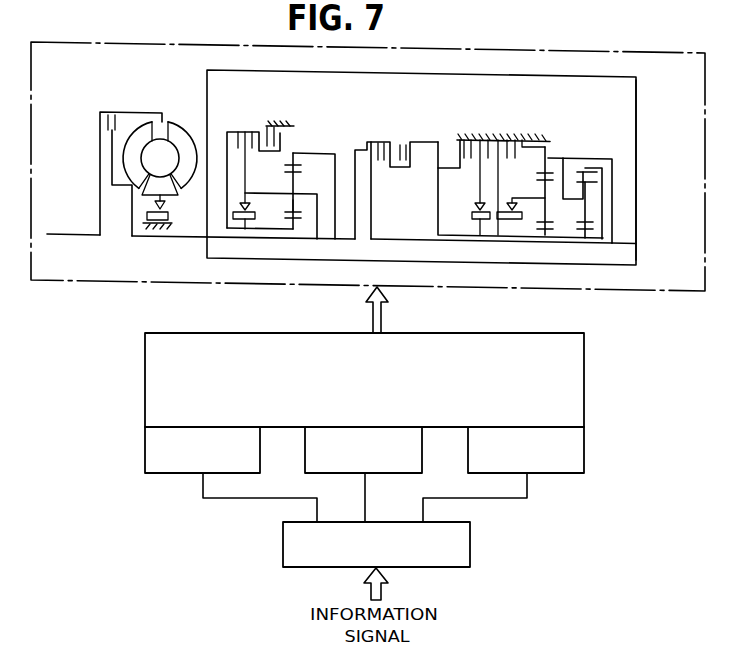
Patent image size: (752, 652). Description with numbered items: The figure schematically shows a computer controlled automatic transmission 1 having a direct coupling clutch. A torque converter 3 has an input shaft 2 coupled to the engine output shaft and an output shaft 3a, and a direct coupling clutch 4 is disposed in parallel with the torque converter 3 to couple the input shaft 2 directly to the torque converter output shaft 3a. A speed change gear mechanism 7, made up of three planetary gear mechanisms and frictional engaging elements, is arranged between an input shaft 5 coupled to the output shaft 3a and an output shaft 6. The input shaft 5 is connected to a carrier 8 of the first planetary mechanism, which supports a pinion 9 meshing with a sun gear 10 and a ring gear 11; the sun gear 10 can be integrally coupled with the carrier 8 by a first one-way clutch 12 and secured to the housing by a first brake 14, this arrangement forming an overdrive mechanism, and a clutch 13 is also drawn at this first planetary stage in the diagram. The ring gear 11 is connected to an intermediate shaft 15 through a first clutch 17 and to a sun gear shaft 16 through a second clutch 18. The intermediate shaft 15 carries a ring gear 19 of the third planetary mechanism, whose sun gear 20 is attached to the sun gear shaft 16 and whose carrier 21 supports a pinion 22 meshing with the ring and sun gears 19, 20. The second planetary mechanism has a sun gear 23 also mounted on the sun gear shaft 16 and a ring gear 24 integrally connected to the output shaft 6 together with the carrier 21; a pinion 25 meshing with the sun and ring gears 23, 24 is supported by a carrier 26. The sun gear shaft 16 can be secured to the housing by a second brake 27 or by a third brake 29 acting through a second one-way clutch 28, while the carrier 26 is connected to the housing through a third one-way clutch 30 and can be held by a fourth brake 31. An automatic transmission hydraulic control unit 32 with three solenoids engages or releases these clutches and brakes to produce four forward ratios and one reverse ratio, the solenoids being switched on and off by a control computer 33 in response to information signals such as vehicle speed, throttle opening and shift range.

The automatic transmission 1 is at (118, 43).
The input shaft 2 is at (75, 234).
The torque converter 3 is at (160, 180).
The output shaft 3a is at (157, 237).
The direct coupling clutch 4 is at (119, 112).
The input shaft 5 is at (188, 235).
The output shaft 6 is at (637, 247).
The speed change gear mechanism 7 is at (637, 134).
The carrier 8 is at (308, 194).
The pinion 9 is at (303, 214).
The sun gear 10 is at (290, 222).
The ring gear 11 is at (285, 166).
The F0 one-way clutch 12 is at (245, 230).
The clutch C0 13 is at (246, 131).
The B0 brake 14 is at (293, 126).
The intermediate shaft 15 is at (565, 245).
The sun gear shaft 16 is at (403, 241).
The C1 clutch 17 is at (357, 150).
The C2 clutch 18 is at (402, 146).
The ring gear 19 is at (598, 170).
The sun gear 20 is at (591, 228).
The carrier 21 is at (563, 159).
The pinion 22 is at (591, 190).
The sun gear 23 is at (544, 230).
The ring gear 24 is at (548, 158).
The pinion 25 is at (532, 237).
The carrier 26 is at (527, 197).
The B1 brake 27 is at (461, 142).
The F1 one-way clutch 28 is at (478, 220).
The B2 brake 29 is at (480, 140).
The F2 one-way clutch 30 is at (505, 220).
The B3 brake 31 is at (510, 140).
The automatic transmission hydraulic control unit 32 is at (584, 379).
The control computer 33 is at (470, 549).